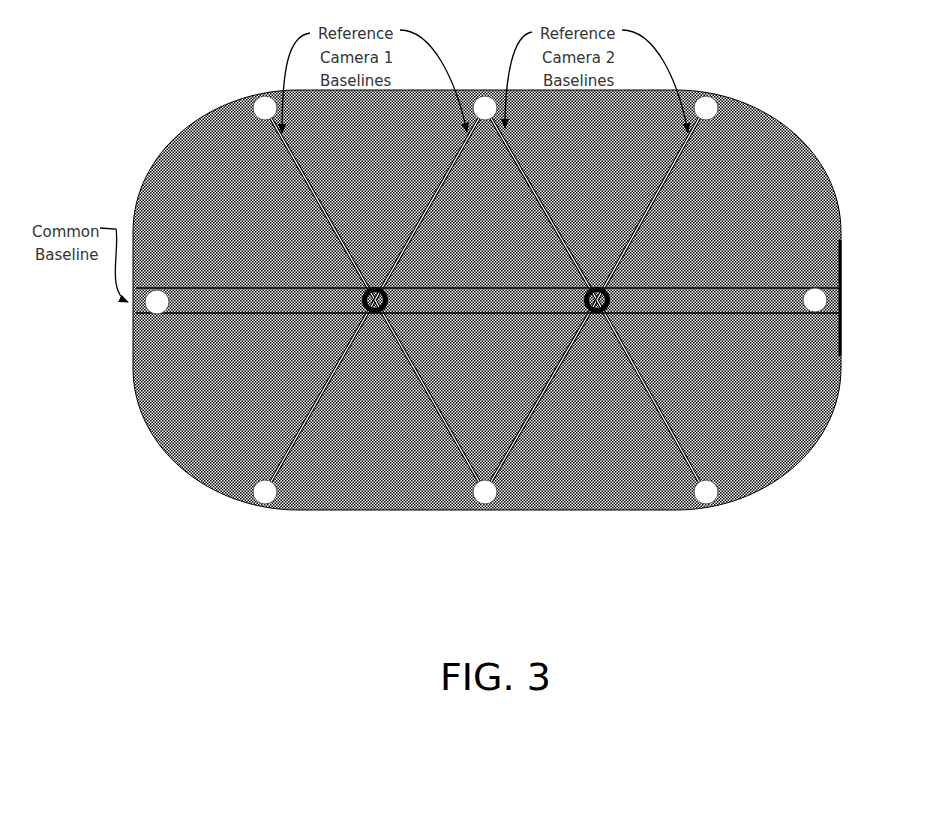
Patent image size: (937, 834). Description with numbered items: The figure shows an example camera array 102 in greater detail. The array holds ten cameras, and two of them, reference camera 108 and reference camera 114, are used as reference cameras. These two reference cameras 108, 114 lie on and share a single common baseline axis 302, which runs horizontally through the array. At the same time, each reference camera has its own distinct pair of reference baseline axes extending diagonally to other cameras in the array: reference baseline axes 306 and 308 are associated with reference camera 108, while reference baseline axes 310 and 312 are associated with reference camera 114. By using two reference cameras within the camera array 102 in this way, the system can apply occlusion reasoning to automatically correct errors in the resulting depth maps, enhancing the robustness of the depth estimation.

The camera array 102 is at (505, 384).
The common baseline axis 302 is at (712, 300).
The reference camera 114 is at (407, 272).
The reference camera 108 is at (617, 277).
The reference baseline axis 312 is at (458, 158).
The reference baseline axis 310 is at (427, 393).
The reference baseline axis 308 is at (677, 157).
The reference baseline axis 306 is at (657, 410).